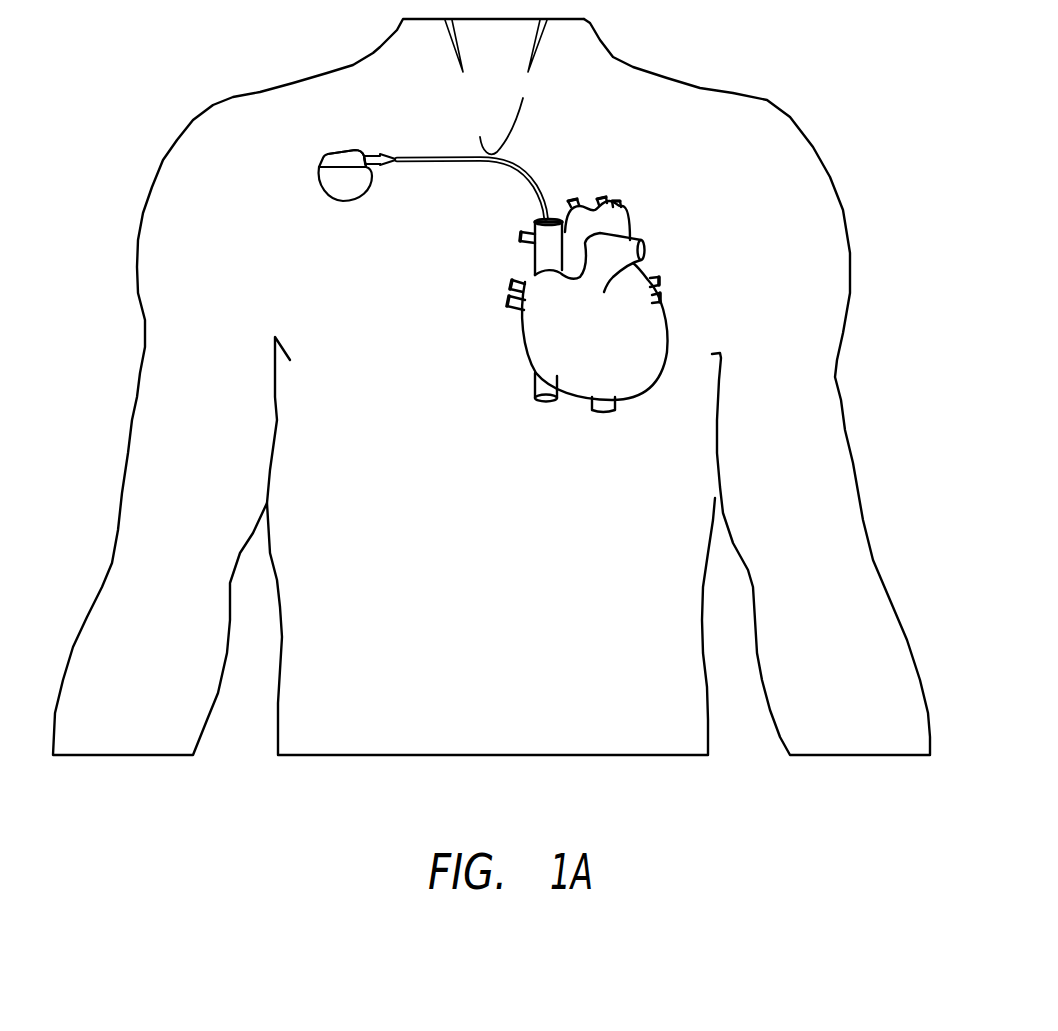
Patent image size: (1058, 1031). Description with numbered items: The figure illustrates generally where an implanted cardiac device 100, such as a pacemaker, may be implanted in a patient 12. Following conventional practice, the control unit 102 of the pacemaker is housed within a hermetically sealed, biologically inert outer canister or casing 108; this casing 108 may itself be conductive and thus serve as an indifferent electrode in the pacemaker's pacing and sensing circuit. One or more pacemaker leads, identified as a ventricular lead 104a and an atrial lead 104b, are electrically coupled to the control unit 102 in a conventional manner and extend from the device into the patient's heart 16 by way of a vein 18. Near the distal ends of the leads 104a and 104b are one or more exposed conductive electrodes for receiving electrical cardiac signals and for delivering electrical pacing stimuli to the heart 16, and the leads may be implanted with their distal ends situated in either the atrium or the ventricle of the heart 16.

The patient 12 is at (728, 92).
The heart 16 is at (620, 220).
The vein 18 is at (458, 156).
The implanted cardiac device 100 is at (385, 258).
The control unit 102 is at (315, 134).
The ventricular pacemaker lead 104a is at (369, 152).
The atrial pacemaker lead 104b is at (378, 168).
The outer canister or casing 108 is at (352, 197).